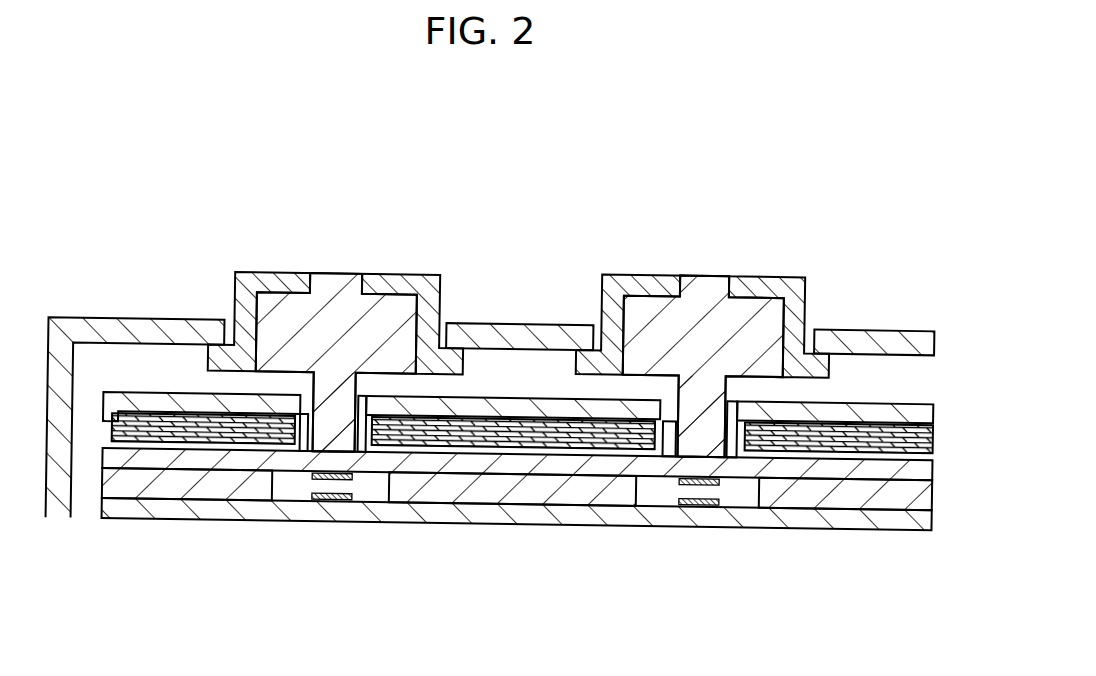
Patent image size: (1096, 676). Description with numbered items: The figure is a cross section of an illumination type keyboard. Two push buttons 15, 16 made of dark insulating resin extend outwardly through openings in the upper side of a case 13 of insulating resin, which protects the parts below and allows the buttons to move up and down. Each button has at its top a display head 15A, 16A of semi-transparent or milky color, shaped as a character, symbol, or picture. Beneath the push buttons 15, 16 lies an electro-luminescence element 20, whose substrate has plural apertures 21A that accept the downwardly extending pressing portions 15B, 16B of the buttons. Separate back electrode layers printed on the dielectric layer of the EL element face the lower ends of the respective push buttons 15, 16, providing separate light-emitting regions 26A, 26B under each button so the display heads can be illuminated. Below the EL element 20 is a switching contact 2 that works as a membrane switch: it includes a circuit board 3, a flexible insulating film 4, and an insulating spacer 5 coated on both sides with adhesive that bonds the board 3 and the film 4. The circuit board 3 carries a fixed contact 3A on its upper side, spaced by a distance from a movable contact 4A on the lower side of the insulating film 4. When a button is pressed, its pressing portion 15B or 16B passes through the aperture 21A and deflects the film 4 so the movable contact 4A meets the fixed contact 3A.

The switching contact 2 is at (503, 562).
The circuit board 3 is at (228, 511).
The fixed contact 3A is at (508, 555).
The flexible insulating film 4 is at (147, 461).
The movable contact 4A is at (323, 467).
The insulating spacer 5 is at (180, 491).
The case 13 is at (138, 327).
The push button 15 is at (275, 270).
The display head 15A is at (335, 272).
The pressing portion 15B is at (335, 410).
The push button 16 is at (622, 275).
The display head 16A is at (690, 276).
The pressing portion 16B is at (698, 426).
The electro-luminescence element 20 is at (557, 446).
The aperture 21A is at (361, 449).
The light-emitting region 26A is at (423, 452).
The light-emitting region 26B is at (813, 436).